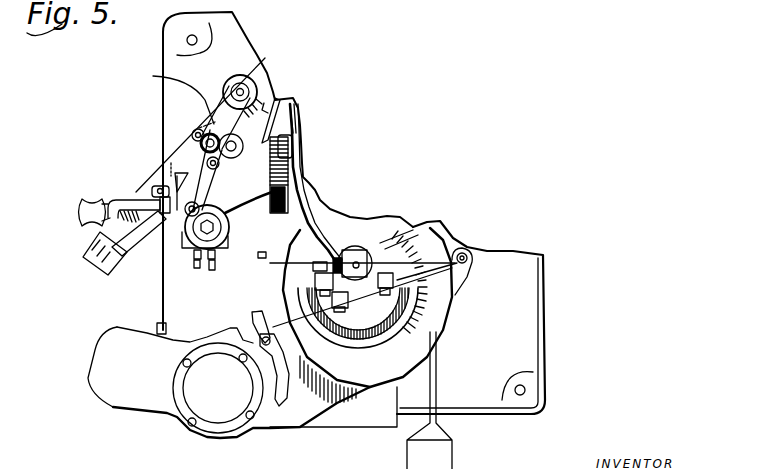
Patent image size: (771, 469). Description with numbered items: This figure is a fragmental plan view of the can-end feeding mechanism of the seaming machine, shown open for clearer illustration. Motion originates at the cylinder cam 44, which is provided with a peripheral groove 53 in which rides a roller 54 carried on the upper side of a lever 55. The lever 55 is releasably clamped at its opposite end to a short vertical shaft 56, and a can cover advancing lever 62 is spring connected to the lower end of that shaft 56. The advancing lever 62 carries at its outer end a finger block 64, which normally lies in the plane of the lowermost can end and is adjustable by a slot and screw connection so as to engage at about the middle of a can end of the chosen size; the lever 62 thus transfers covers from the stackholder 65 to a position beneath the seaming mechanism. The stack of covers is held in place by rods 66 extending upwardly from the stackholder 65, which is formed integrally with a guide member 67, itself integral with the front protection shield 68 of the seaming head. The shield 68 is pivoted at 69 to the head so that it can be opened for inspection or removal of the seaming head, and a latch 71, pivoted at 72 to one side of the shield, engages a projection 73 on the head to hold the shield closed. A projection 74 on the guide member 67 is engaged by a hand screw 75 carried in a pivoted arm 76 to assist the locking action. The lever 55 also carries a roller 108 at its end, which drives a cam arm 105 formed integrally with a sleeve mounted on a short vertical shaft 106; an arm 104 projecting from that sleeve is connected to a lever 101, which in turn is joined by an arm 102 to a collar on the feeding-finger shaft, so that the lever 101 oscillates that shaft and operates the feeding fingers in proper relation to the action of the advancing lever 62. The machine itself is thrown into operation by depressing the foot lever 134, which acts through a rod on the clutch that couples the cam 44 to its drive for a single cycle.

The cylinder cam 44 is at (296, 112).
The peripheral groove 53 is at (282, 121).
The roller 54 is at (204, 131).
The lever 55 is at (215, 126).
The short vertical shaft 56 is at (242, 90).
The can cover advancing lever 62 is at (160, 184).
The finger block 64 is at (115, 266).
The stackholder 65 is at (212, 352).
The rods 66 is at (249, 425).
The guide member 67 is at (297, 412).
The front protection shield 68 is at (443, 341).
The pivot 69 is at (464, 257).
The latch 71 is at (258, 322).
The pivot 72 is at (267, 337).
The projection 73 is at (262, 254).
The projection 74 is at (158, 325).
The hand screw 75 is at (92, 201).
The pivoted arm 76 is at (127, 200).
The lever 101 is at (190, 157).
The arm 102 is at (187, 228).
The arm 104 is at (206, 139).
The cam arm 105 is at (226, 186).
The short vertical shaft 106 is at (212, 170).
The roller 108 is at (170, 214).
The foot lever 134 is at (440, 463).